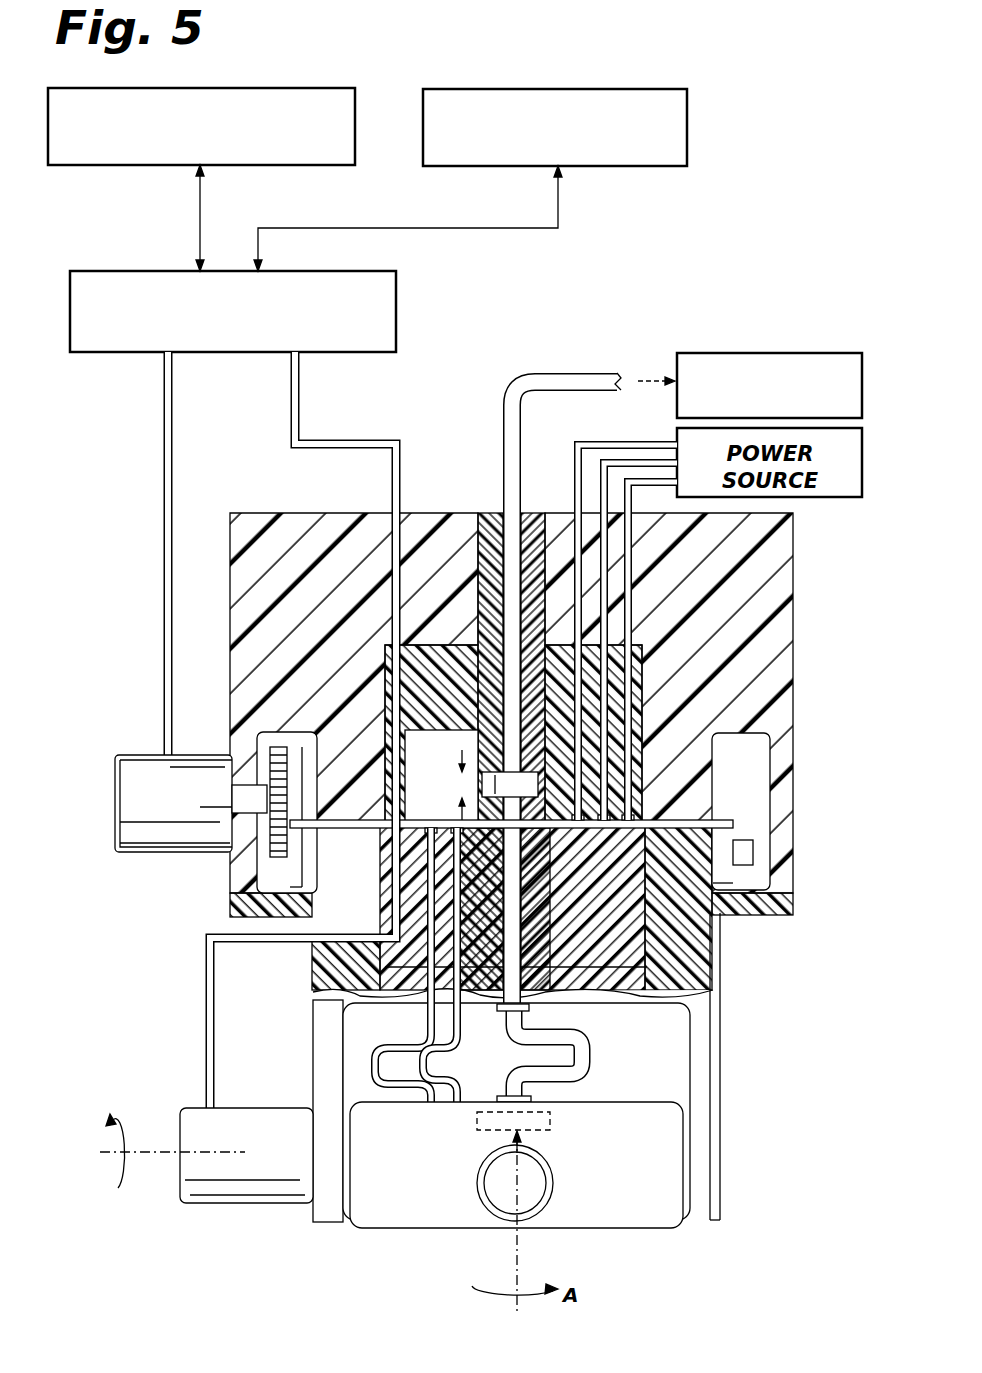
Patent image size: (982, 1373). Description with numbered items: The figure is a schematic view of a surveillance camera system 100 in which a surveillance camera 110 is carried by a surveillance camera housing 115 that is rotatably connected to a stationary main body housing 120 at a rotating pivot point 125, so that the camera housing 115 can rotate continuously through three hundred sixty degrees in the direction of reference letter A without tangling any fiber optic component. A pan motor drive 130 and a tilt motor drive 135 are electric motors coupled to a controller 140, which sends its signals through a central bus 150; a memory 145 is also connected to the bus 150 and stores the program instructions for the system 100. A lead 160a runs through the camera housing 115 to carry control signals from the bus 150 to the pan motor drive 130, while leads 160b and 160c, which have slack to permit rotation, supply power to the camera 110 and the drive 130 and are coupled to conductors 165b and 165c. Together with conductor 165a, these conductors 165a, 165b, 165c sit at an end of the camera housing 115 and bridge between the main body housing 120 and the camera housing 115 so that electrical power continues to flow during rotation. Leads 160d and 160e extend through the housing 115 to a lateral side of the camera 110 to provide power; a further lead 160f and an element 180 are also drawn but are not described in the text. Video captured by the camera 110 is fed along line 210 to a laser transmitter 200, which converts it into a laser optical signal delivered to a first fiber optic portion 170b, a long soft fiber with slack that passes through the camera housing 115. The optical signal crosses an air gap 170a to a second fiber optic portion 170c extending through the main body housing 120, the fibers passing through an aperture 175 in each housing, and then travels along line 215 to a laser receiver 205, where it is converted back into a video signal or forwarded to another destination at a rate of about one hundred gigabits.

The surveillance camera system 100 is at (712, 240).
The surveillance camera 110 is at (650, 1213).
The surveillance camera housing 115 is at (722, 1052).
The main body housing 120 is at (810, 600).
The rotating pivot point 125 is at (586, 1066).
The pan motor drive 130 is at (232, 1188).
The tilt motor drive 135 is at (130, 757).
The controller 140 is at (332, 78).
The memory 145 is at (648, 88).
The central bus 150 is at (398, 289).
The lead 160a is at (205, 992).
The lead 160b is at (390, 1100).
The lead 160c is at (443, 1102).
The lead 160d is at (582, 527).
The lead 160e is at (607, 557).
The wire 160f is at (631, 587).
The conductor 165a is at (380, 843).
The conductor 165b is at (385, 867).
The conductor 165c is at (385, 890).
The air gap 170a is at (460, 783).
The first fiber optic portion 170b is at (577, 987).
The second fiber optic portion 170c is at (549, 375).
The aperture 175 is at (495, 525).
The nozzle 180 is at (495, 553).
The laser transmitter 200 is at (560, 1121).
The laser receiver 205 is at (779, 352).
The line 210 is at (545, 1178).
The line 215 is at (621, 383).